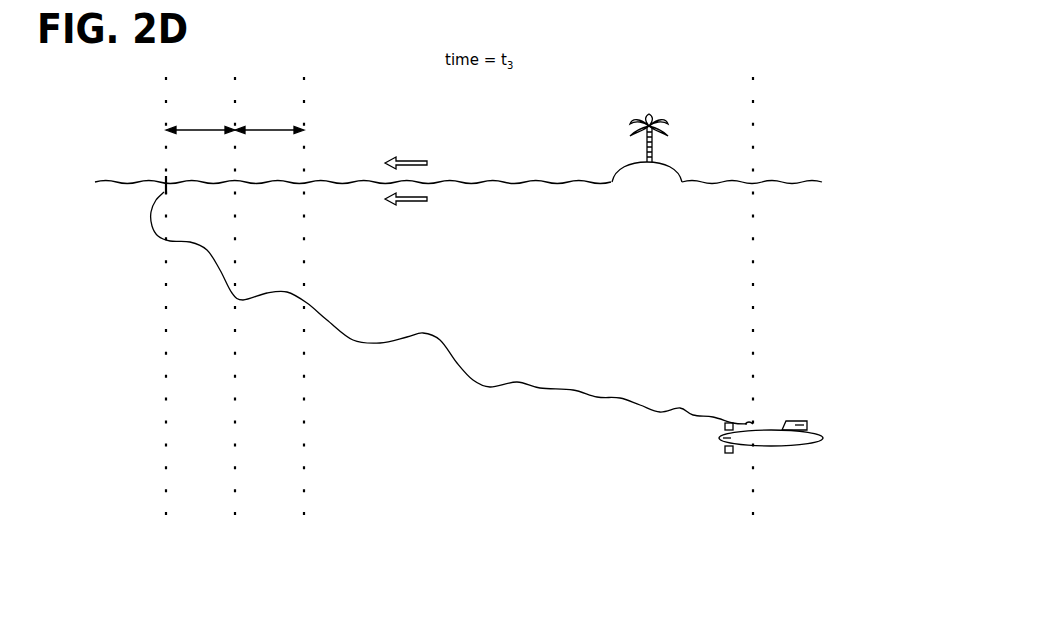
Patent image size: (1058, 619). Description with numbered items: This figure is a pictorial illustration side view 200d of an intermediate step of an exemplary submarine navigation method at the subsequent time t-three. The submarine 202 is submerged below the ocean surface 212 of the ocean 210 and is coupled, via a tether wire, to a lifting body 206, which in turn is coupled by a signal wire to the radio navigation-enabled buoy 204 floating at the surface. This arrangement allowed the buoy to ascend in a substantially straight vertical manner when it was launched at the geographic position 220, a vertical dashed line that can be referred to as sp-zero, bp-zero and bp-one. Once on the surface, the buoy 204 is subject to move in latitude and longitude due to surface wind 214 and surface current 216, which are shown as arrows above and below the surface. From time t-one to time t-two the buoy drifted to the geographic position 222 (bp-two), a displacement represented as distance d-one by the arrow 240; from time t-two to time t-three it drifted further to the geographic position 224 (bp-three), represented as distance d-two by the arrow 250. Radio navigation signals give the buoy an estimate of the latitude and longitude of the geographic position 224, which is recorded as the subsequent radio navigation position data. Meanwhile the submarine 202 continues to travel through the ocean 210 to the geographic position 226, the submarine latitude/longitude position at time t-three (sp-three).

The pictorial illustration side view 200d is at (858, 74).
The submarine 202 is at (796, 437).
The radio navigation-enabled buoy 204 is at (164, 189).
The lifting body 206 is at (753, 422).
The ocean 210 is at (562, 324).
The ocean surface 212 is at (332, 182).
The surface wind 214 is at (413, 163).
The surface current 216 is at (413, 199).
The geographic position 220 is at (305, 496).
The geographic position 222 is at (236, 496).
The geographic position 224 is at (167, 496).
The geographic position 226 is at (755, 503).
The arrow 240 is at (257, 130).
The arrow 250 is at (189, 130).